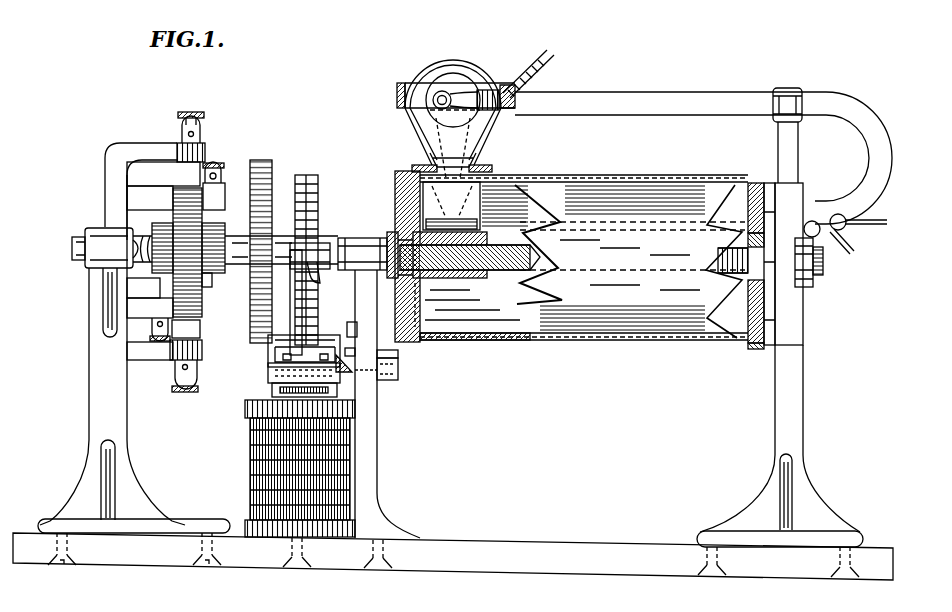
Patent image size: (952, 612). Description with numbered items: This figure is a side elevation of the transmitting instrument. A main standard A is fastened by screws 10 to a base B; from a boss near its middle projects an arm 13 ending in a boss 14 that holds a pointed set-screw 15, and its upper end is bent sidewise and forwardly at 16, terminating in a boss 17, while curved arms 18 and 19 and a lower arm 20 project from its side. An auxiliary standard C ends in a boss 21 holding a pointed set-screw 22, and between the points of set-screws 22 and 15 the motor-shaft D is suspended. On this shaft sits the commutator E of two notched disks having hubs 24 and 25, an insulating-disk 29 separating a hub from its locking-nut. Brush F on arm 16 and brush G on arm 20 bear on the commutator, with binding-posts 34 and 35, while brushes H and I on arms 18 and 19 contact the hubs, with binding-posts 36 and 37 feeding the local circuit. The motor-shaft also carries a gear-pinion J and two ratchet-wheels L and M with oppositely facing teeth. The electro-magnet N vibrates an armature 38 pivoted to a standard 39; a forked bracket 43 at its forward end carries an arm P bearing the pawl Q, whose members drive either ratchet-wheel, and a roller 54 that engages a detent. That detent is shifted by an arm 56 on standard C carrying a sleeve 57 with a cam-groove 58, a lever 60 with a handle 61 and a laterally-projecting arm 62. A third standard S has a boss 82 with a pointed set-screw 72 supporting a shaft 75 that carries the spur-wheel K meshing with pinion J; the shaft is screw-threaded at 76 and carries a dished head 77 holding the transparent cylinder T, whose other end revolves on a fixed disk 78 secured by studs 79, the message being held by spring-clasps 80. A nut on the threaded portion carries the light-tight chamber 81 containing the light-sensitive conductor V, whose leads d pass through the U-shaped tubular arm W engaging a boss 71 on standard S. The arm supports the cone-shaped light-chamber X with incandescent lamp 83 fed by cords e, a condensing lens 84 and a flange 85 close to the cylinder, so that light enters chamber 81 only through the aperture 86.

The screws 10 is at (58, 570).
The arm 13 is at (103, 280).
The boss 14 is at (100, 230).
The pointed set-screw 15 is at (72, 247).
The bent upper end 16 is at (153, 153).
The boss 17 is at (206, 154).
The curved arm 18 is at (150, 198).
The curved arm 19 is at (150, 308).
The arm 20 is at (150, 351).
The boss 21 is at (360, 238).
The pointed set-screw 22 is at (386, 234).
The boss 24 is at (166, 226).
The boss 25 is at (212, 284).
The insulating-disk 29 is at (203, 351).
The binding-post 34 is at (182, 132).
The binding-post 35 is at (190, 370).
The binding-post 36 is at (222, 176).
The binding-post 37 is at (154, 324).
The armature 38 is at (268, 372).
The standard 39 is at (267, 391).
The forked bracket 43 is at (264, 355).
The roller 54 is at (305, 340).
The arm 56 is at (398, 370).
The sleeve 57 is at (345, 373).
The cam-groove 58 is at (378, 378).
The lever 60 is at (398, 354).
The handle 61 is at (352, 322).
The laterally-projecting arm 62 is at (347, 344).
The boss 71 is at (789, 84).
The pointed set-screw 72 is at (829, 273).
The shaft 75 is at (330, 240).
The screw-threaded portion 76 is at (500, 275).
The dished head 77 is at (398, 181).
The fixed disk 78 is at (750, 304).
The studs 79 is at (771, 178).
The spring-clasps 80 is at (743, 175).
The light-tight chamber 81 is at (451, 206).
The boss 82 is at (814, 286).
The incandescent lamp 83 is at (462, 99).
The condensing lens 84 is at (456, 155).
The laterally-projecting flange 85 is at (498, 170).
The aperture 86 is at (476, 163).
The main standard A is at (134, 338).
The base B is at (453, 556).
The auxiliary standard C is at (367, 418).
The motor-shaft D is at (339, 196).
The commutator E is at (202, 302).
The brush F is at (183, 173).
The brush G is at (186, 330).
The brush H is at (225, 220).
The brush I is at (158, 287).
The gear-pinion J is at (263, 243).
The spur-wheel K is at (279, 167).
The ratchet-wheel L is at (297, 181).
The ratchet-wheel M is at (318, 178).
The electric motor N is at (252, 467).
The arm P is at (287, 302).
The pawl Q is at (313, 272).
The standard S is at (780, 334).
The transparent cylinder T is at (581, 257).
The electric conductor V is at (457, 292).
The tubular arm W is at (893, 170).
The light-chamber X is at (456, 97).
The leads d is at (856, 255).
The cords e is at (533, 68).